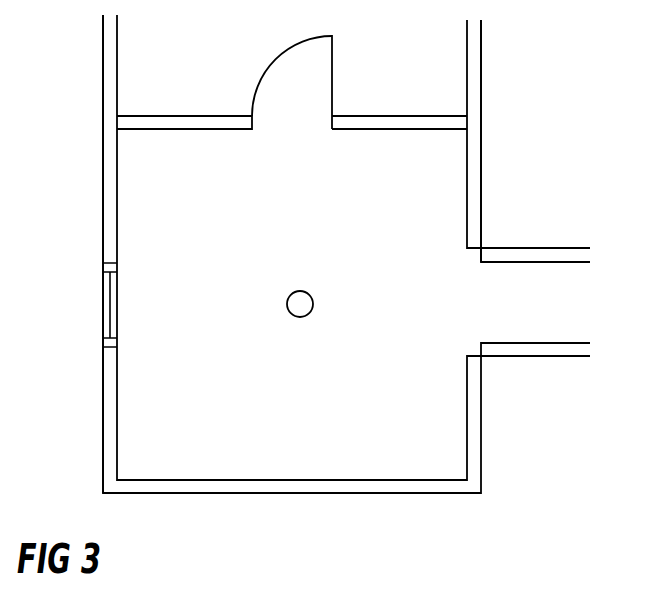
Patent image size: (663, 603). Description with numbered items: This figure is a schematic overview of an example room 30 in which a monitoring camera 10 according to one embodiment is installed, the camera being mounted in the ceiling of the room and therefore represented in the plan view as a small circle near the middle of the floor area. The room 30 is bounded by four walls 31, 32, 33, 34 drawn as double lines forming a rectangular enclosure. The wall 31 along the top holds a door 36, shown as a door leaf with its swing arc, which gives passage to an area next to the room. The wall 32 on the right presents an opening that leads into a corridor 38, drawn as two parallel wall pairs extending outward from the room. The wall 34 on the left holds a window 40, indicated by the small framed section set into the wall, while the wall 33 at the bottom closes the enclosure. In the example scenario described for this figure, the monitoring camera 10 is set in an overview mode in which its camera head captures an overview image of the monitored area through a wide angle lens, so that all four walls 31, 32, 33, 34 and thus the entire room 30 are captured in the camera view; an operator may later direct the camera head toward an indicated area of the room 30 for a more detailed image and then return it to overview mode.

The monitoring camera 10 is at (290, 303).
The room 30 is at (361, 233).
The wall 31 is at (210, 125).
The wall 32 is at (479, 209).
The wall 33 is at (300, 483).
The wall 34 is at (110, 383).
The door 36 is at (327, 78).
The corridor 38 is at (553, 308).
The window 40 is at (108, 300).